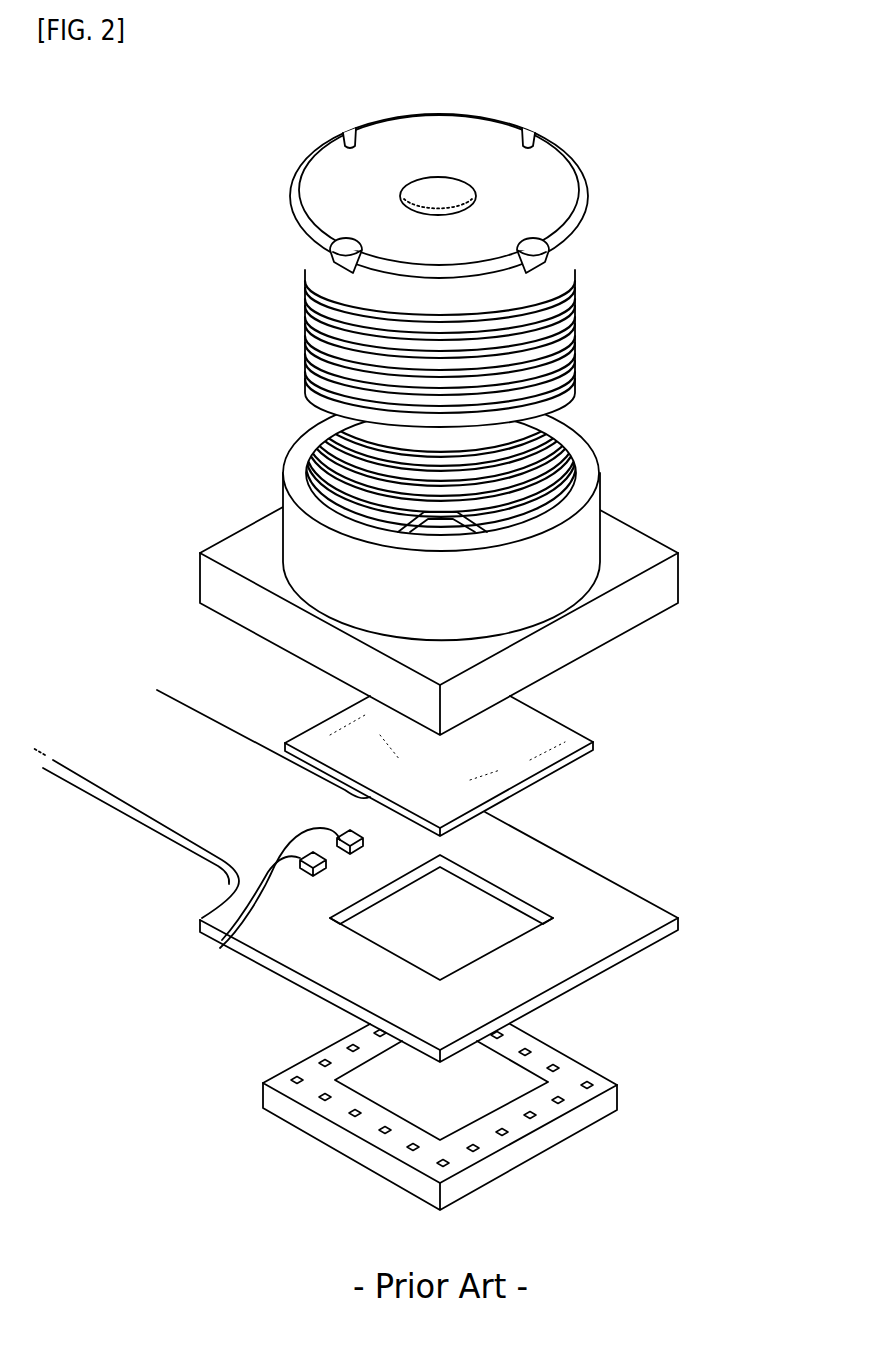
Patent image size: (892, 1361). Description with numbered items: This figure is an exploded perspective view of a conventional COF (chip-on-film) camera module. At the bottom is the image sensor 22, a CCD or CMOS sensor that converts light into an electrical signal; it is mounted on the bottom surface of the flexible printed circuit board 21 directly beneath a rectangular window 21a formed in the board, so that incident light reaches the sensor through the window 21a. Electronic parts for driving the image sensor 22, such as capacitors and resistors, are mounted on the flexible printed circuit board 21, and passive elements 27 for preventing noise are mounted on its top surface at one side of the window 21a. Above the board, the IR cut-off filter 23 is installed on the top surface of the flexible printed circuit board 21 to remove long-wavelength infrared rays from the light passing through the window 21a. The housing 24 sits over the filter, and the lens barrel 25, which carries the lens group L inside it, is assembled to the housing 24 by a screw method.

The lens group L is at (441, 200).
The lens barrel 25 is at (490, 243).
The housing 24 is at (673, 585).
The IR cut-off filter 23 is at (565, 742).
The flexible printed circuit board 21 is at (643, 907).
The rectangular window 21a is at (473, 898).
The image sensor 22 is at (580, 1073).
The passive elements 27 is at (222, 940).